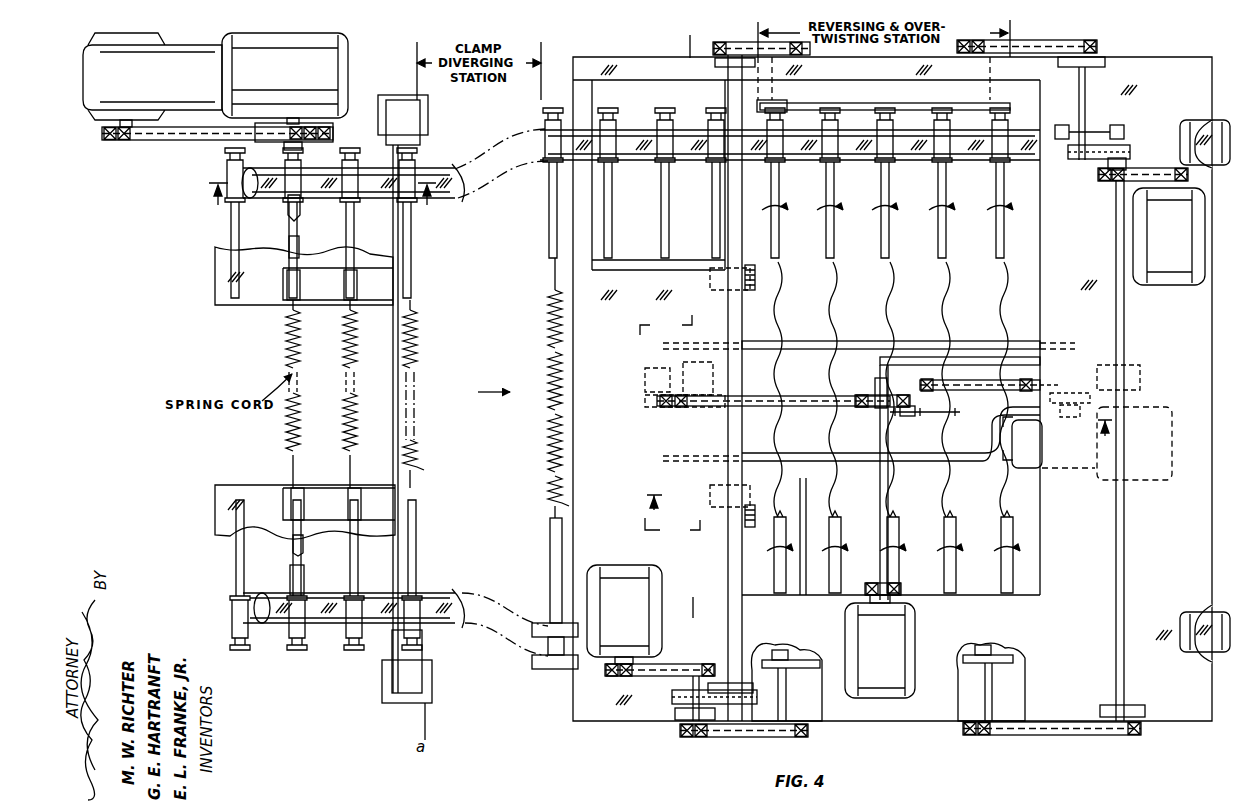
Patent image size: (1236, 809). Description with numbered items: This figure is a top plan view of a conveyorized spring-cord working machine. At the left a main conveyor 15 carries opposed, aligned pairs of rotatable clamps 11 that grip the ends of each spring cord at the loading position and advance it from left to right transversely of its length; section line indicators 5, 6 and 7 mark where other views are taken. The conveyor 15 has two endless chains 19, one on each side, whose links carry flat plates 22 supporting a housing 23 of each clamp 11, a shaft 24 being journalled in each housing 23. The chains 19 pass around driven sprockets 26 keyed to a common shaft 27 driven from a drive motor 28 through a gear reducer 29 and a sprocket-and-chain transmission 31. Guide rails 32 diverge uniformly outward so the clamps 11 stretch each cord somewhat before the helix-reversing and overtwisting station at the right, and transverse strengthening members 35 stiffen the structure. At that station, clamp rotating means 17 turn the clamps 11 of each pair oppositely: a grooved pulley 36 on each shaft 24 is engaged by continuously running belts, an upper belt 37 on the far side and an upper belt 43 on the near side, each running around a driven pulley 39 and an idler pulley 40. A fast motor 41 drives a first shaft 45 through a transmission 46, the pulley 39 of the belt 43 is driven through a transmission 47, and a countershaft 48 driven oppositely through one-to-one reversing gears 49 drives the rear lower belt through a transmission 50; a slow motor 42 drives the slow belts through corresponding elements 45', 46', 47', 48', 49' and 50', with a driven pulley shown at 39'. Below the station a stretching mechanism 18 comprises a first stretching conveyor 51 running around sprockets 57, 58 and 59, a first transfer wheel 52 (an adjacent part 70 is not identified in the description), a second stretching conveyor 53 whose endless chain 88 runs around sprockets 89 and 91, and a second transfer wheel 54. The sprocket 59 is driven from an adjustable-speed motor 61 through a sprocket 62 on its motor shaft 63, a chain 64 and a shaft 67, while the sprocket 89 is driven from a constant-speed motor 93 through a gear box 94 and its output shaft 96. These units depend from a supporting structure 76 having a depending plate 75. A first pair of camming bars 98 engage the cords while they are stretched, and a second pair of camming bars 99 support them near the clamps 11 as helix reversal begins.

The section line 5- 5 is at (876, 422).
The section line 6- 6 is at (688, 43).
The section line 7- 7 is at (322, 207).
The clamps 11 is at (344, 236).
The main conveyor 15 is at (510, 725).
The clamp rotating means 17 is at (952, 104).
The stretching mechanism 18 is at (823, 410).
The endless chains 19 is at (460, 200).
The flat plate 22 is at (696, 119).
The housing 23 is at (661, 121).
The shaft 24 is at (350, 546).
The driven sprocket 26 is at (311, 178).
The common shaft 27 is at (288, 218).
The drive motor 28 is at (350, 48).
The gear reducer 29 is at (92, 108).
The sprocket-and-chain transmission 31 is at (197, 139).
The guide rails 32 is at (426, 166).
The transverse strengthening members 35 is at (392, 352).
The grooved pulley 36 is at (884, 104).
The upper belt 37 is at (862, 103).
The driven pulley 39 is at (764, 674).
The shaft 39' is at (1015, 92).
The idler pulley 40 is at (815, 105).
The fast motor 41 is at (635, 568).
The slow motor 42 is at (1161, 286).
The upper belt 43 is at (818, 668).
The first shaft 45 is at (681, 698).
The shaft 45' is at (1112, 450).
The sprocket-and-chain transmission 46 is at (660, 683).
The sprocket-and-chain transmission 46' is at (1143, 157).
The sprocket-and-chain transmission 47 is at (744, 743).
The sprocket-and-chain transmission 47' is at (1052, 739).
The countershaft 48 is at (713, 552).
The countershaft 48' is at (1085, 113).
The reversing gears 49 is at (702, 702).
The reversing gears 49' is at (1094, 164).
The sprocket-and-chain transmission 50 is at (754, 370).
The sprocket-and-chain transmission 50' is at (1031, 41).
The first stretching conveyor 51 is at (780, 396).
The first transfer wheel 52 is at (964, 416).
The second stretching conveyor 53 is at (950, 393).
The second transfer wheel 54 is at (1085, 398).
The sprocket 57 is at (676, 413).
The sprocket 58 is at (906, 395).
The sprocket 59 is at (882, 390).
The adjustable-speed motor 61 is at (920, 618).
The sprocket 62 is at (898, 588).
The motor shaft 63 is at (848, 605).
The chain 64 is at (872, 585).
The shaft 67 is at (880, 496).
The lever 70 is at (903, 416).
The depending plate 75 is at (958, 357).
The supporting structure 76 is at (626, 724).
The endless chain 88 is at (982, 385).
The sprocket 89 is at (1054, 382).
The sprocket 91 is at (950, 385).
The constant-speed motor 93 is at (1145, 484).
The gear box 94 is at (1060, 472).
The output shaft 96 is at (1062, 410).
The camming bars 98 is at (760, 341).
The camming bars 99 is at (755, 290).